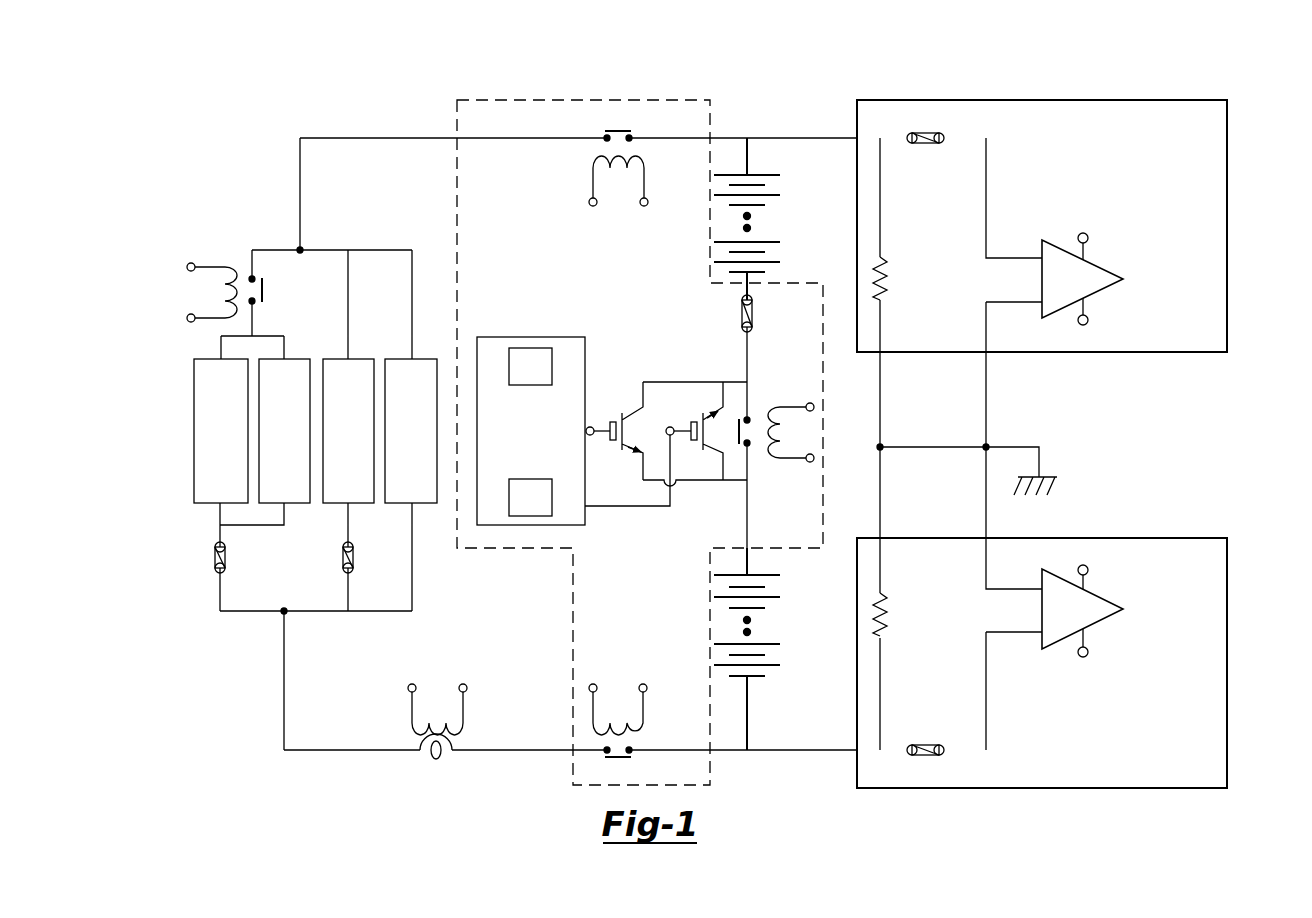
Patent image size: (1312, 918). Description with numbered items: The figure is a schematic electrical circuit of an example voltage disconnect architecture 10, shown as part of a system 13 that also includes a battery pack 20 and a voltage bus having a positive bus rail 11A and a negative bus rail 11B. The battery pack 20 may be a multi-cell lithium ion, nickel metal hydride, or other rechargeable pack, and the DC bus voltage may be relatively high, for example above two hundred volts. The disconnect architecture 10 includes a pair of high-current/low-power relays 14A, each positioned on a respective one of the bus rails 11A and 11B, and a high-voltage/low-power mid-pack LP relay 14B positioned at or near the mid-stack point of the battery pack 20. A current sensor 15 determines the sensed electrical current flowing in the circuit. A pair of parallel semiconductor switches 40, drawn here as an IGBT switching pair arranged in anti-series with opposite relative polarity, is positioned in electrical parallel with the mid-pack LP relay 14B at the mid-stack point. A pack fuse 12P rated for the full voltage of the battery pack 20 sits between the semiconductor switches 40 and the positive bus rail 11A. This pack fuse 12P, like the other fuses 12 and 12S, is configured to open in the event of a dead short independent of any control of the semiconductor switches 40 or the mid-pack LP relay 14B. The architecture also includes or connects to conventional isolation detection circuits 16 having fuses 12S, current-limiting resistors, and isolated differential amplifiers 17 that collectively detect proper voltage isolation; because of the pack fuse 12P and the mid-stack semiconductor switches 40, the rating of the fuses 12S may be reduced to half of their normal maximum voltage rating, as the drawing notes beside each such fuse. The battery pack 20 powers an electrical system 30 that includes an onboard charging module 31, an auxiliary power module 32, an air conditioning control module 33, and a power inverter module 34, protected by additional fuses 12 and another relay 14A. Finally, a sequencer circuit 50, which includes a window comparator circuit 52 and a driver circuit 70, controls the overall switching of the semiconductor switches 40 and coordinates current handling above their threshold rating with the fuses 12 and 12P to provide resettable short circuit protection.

The voltage disconnect architecture 10 is at (573, 100).
The positive bus rail 11A is at (407, 138).
The negative bus rail 11B is at (290, 752).
The fuse 12 is at (227, 560).
The pack fuse 12P is at (740, 313).
The fuse of isolation detection circuit 12S is at (925, 132).
The system 13 is at (1071, 408).
The high-current/low-power relay 14A is at (205, 240).
The mid-pack LP relay 14B is at (784, 400).
The current sensor 15 is at (440, 770).
The isolation detection circuit 16 is at (1227, 323).
The isolated differential amplifier 17 is at (1095, 263).
The battery pack 20 is at (692, 240).
The electrical system 30 is at (280, 433).
The onboard charging module 31 is at (194, 430).
The auxiliary power module 32 is at (300, 359).
The air conditioning control module 33 is at (362, 359).
The power inverter module 34 is at (425, 359).
The semiconductor switches 40 is at (716, 506).
The sequencer circuit 50 is at (520, 432).
The window comparator circuit 52 is at (520, 510).
The driver circuit 70 is at (520, 379).